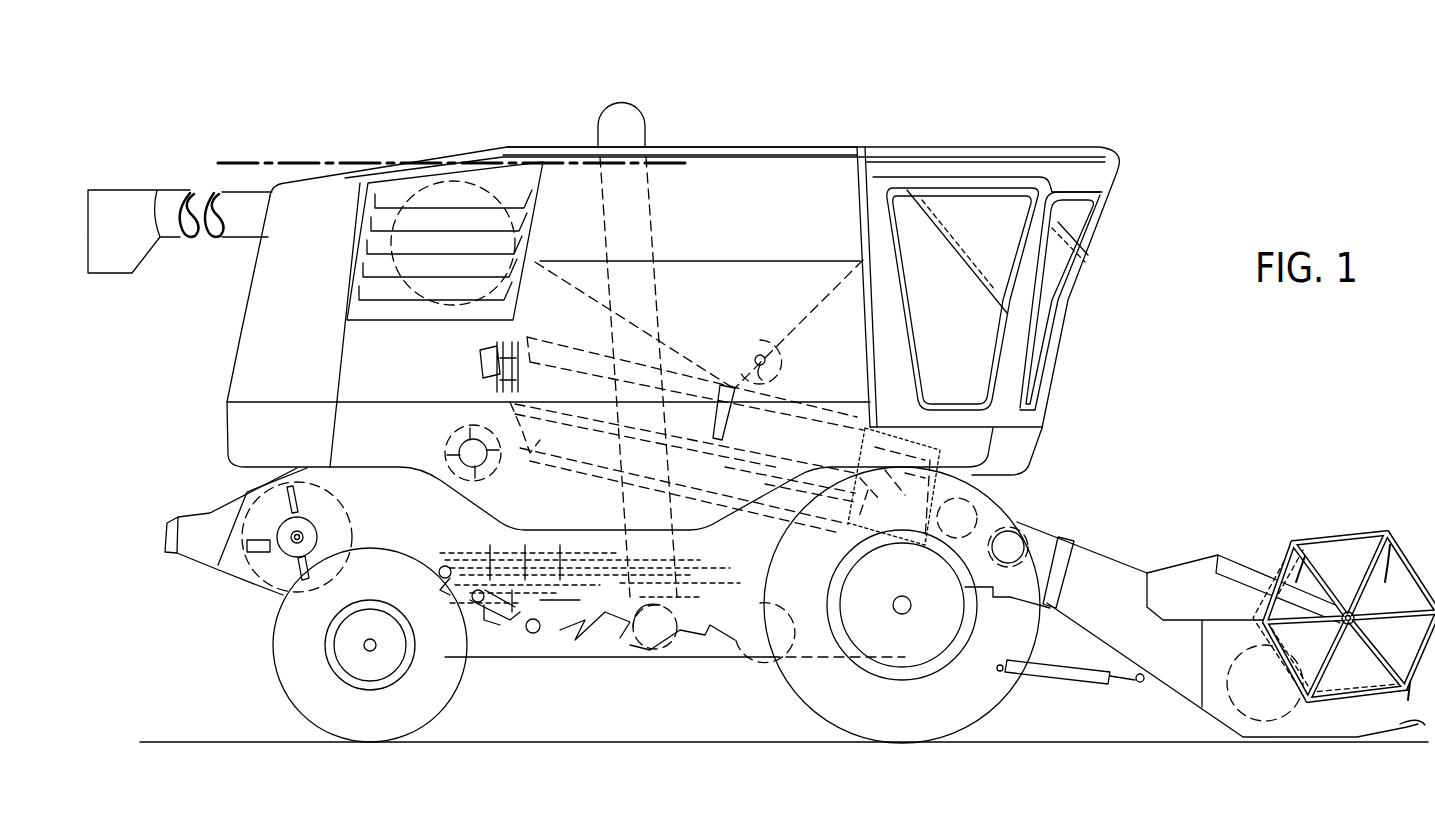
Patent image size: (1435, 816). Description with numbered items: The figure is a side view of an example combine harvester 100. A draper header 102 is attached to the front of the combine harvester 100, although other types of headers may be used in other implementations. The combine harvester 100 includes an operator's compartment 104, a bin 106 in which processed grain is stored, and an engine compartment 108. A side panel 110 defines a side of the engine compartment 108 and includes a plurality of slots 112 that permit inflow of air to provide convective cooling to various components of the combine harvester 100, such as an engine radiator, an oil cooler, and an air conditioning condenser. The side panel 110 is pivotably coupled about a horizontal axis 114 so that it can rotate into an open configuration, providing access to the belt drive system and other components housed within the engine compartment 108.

The combine harvester 100 is at (1238, 105).
The draper header 102 is at (1380, 538).
The operator's compartment 104 is at (1047, 318).
The bin 106 is at (758, 147).
The engine compartment 108 is at (402, 185).
The side panel 110 is at (397, 432).
The slots 112 is at (413, 272).
The horizontal axis 114 is at (663, 162).